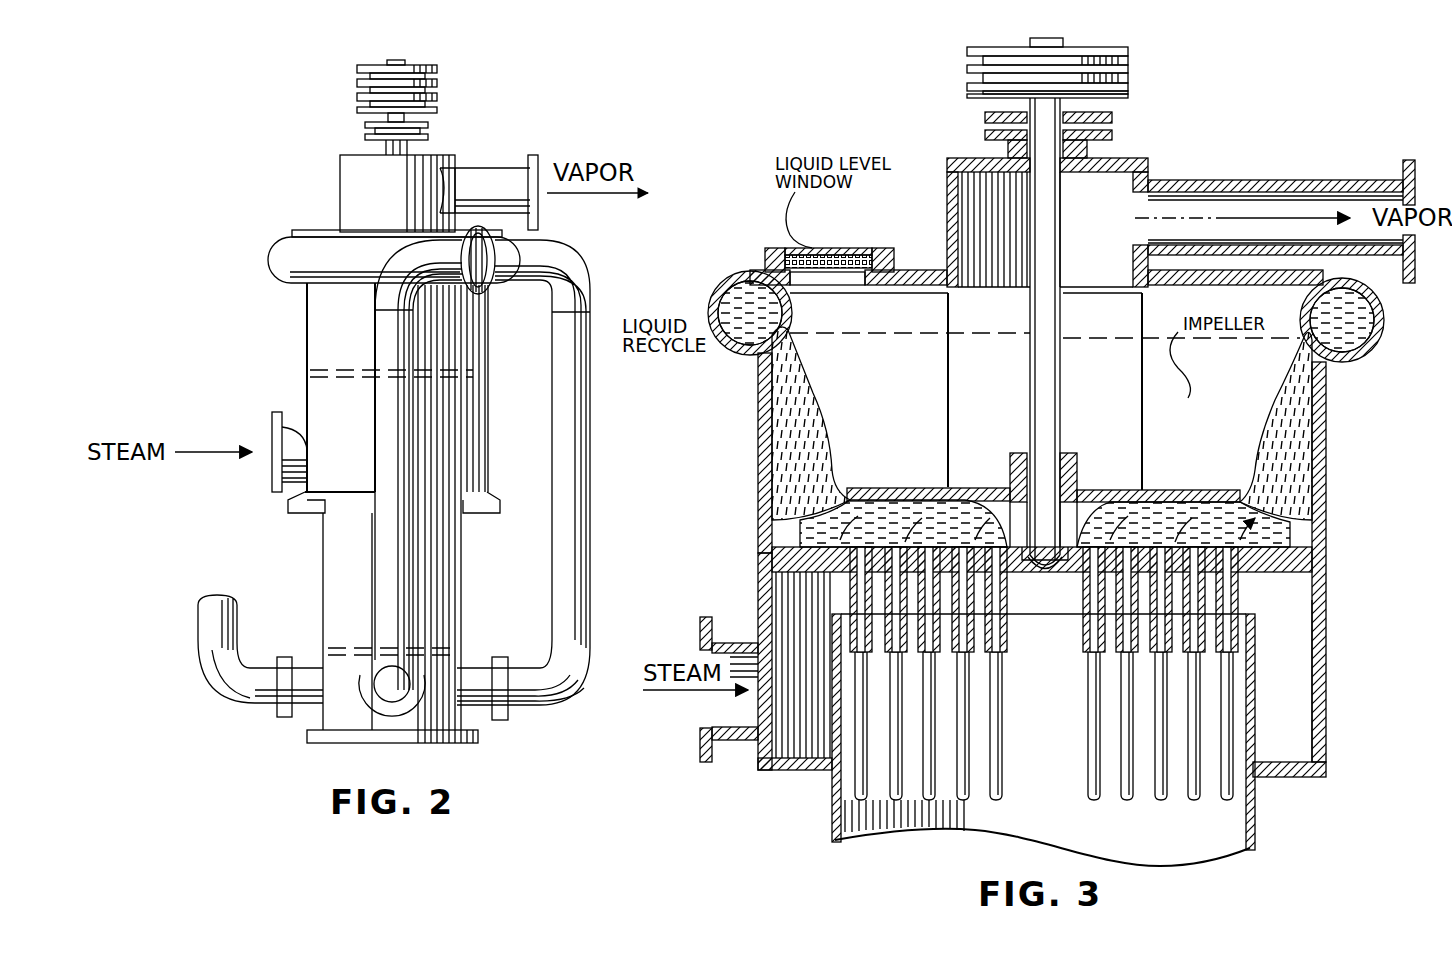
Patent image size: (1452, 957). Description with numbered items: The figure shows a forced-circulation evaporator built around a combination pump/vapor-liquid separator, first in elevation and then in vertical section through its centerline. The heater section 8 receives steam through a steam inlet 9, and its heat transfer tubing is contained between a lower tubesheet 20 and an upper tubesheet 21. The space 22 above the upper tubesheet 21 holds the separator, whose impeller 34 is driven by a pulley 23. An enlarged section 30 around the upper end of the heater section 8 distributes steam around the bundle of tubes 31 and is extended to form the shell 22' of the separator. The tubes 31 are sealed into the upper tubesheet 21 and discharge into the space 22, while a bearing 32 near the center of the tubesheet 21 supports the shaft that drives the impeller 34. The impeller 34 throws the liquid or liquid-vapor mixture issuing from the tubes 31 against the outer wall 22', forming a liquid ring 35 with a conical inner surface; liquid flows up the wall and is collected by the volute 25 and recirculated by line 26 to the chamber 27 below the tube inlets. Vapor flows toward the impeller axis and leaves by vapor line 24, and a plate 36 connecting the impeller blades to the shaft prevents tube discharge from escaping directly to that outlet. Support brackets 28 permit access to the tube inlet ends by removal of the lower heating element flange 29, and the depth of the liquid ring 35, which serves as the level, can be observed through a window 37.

In FIG. 2, the heater section 8 is at (447, 575).
In FIG. 3, the heater section 8 is at (1256, 824).
In FIG. 2, the steam inlet 9 is at (272, 478).
In FIG. 3, the steam inlet 9 is at (745, 715).
In FIG. 2, the lower tubesheet 20 is at (352, 645).
In FIG. 2, the upper tubesheet 21 is at (335, 368).
In FIG. 3, the upper tubesheet 21 is at (785, 553).
In FIG. 2, the space above upper tubesheet 22 is at (314, 387).
In FIG. 3, the space above upper tubesheet 22 is at (971, 500).
In FIG. 3, the shell 22' is at (735, 453).
In FIG. 2, the pulley 23 is at (357, 88).
In FIG. 3, the pulley 23 is at (1128, 73).
In FIG. 2, the vapor line 24 is at (483, 175).
In FIG. 3, the vapor line 24 is at (1280, 180).
In FIG. 2, the volute 25 is at (282, 252).
In FIG. 3, the volute 25 is at (1386, 327).
In FIG. 2, the recirculation line 26 is at (205, 622).
In FIG. 2, the chamber 27 is at (330, 712).
In FIG. 2, the support brackets 28 is at (305, 515).
In FIG. 2, the lower heating element flange 29 is at (455, 745).
In FIG. 3, the enlarged section 30 is at (1326, 645).
In FIG. 3, the heat transfer tubes 31 is at (1062, 763).
In FIG. 3, the bearing 32 is at (1066, 582).
In FIG. 3, the impeller 34 is at (935, 313).
In FIG. 3, the liquid ring 35 is at (813, 403).
In FIG. 3, the plate 36 is at (1168, 490).
In FIG. 3, the window 37 is at (843, 250).